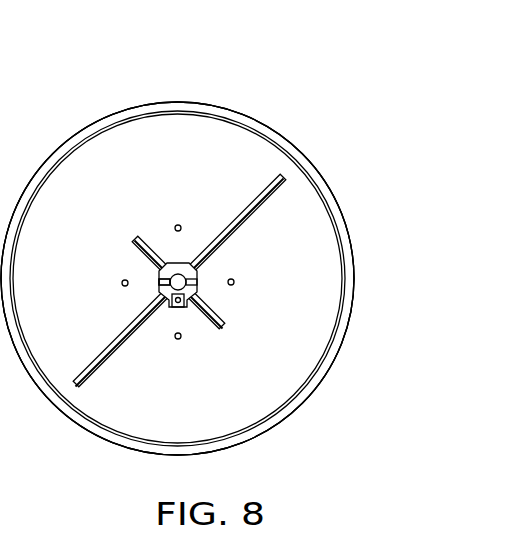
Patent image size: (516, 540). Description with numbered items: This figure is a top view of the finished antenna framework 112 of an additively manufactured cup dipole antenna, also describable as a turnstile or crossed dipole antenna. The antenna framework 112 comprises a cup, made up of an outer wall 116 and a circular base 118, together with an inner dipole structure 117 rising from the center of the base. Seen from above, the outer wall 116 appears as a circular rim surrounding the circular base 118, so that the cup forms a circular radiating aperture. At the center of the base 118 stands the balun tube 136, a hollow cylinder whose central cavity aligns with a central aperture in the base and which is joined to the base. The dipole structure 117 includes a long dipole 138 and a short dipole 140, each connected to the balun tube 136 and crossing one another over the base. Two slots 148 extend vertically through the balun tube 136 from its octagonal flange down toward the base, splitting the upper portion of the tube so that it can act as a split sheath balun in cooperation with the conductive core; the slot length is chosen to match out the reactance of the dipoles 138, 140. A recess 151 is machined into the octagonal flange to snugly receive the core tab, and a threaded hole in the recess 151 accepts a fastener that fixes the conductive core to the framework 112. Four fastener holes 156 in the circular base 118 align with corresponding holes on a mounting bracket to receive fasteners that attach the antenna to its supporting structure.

The antenna framework 112 is at (138, 70).
The outer wall 116 is at (294, 144).
The inner dipole structure 117 is at (333, 189).
The circular base 118 is at (283, 349).
The balun tube 136 is at (154, 288).
The long dipole 138 is at (254, 204).
The short dipole 140 is at (138, 239).
The slots 148 is at (157, 281).
The recess 151 is at (175, 305).
The fastener holes 156 is at (234, 282).